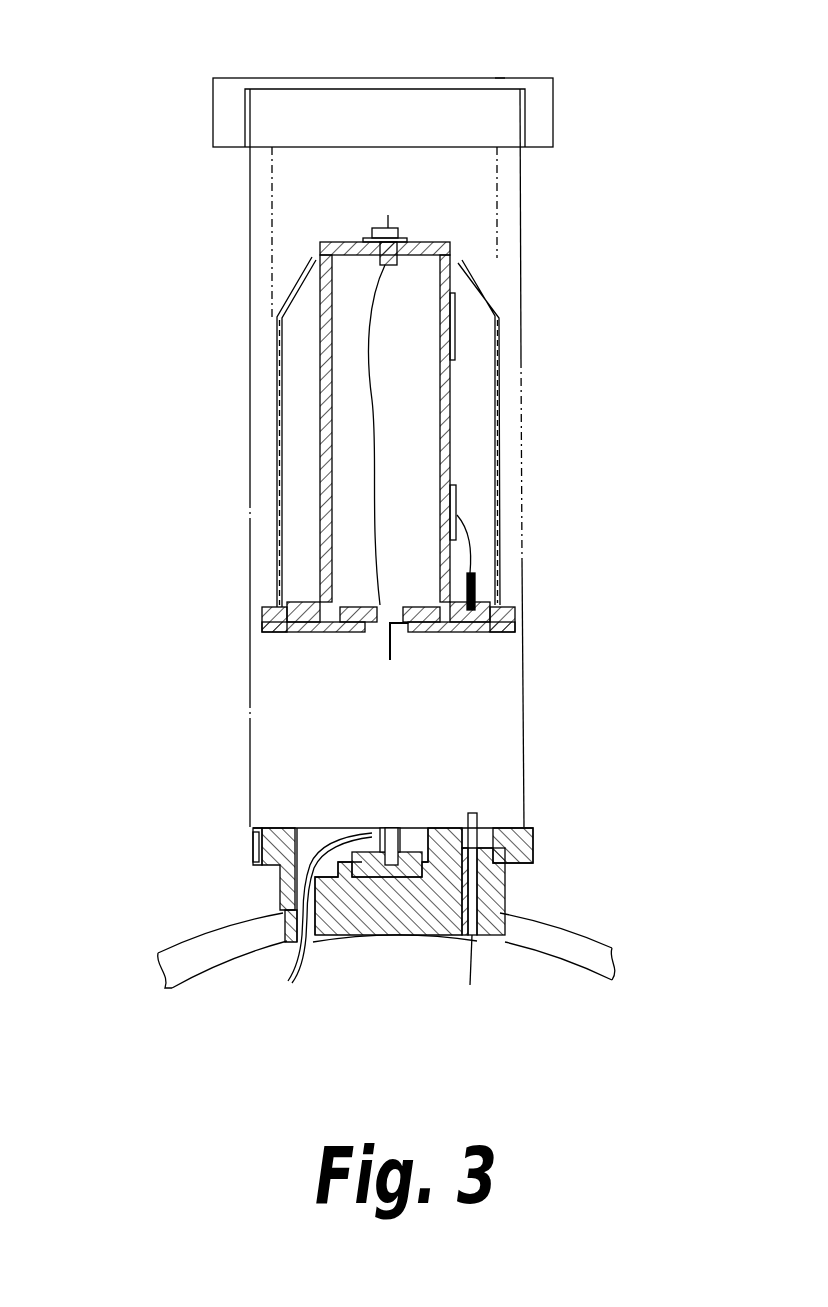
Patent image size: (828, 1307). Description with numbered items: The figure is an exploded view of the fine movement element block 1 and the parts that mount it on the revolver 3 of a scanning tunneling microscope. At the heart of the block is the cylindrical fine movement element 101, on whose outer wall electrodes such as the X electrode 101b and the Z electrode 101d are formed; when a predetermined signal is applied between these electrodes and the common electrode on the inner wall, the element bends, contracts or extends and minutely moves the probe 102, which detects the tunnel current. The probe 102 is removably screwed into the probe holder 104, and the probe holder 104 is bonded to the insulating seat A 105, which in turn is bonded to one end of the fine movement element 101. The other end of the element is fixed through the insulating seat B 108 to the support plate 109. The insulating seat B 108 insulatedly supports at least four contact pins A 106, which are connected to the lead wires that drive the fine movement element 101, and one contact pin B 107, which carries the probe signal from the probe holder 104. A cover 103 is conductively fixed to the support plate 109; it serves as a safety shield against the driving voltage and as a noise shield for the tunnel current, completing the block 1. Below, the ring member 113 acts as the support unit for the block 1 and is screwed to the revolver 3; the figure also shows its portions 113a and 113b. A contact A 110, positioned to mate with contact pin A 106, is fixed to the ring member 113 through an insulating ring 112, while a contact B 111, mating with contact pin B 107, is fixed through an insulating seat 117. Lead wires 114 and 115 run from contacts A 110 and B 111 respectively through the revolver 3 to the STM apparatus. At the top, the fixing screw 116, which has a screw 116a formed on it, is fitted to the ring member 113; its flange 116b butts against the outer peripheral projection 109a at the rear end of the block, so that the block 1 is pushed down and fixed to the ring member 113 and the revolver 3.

The fine movement element block 1 is at (535, 477).
The revolver 3 is at (583, 940).
The cylindrical fine movement element 101 is at (450, 402).
The X electrode 101b is at (455, 497).
The Z electrode 101d is at (453, 347).
The probe 102 is at (389, 217).
The cover 103 is at (487, 293).
The probe holder 104 is at (363, 240).
The insulating seat A 105 is at (368, 240).
The contact pin A 106 is at (478, 593).
The contact pin B 107 is at (395, 648).
The insulating seat B 108 is at (295, 607).
The support plate 109 is at (317, 632).
The outer peripheral projection 109a is at (262, 622).
The contact A 110 is at (477, 826).
The contact B 111 is at (390, 825).
The insulating ring 112 is at (505, 882).
The ring member 113 is at (267, 822).
The flange insert portion 113a is at (287, 940).
The flange rim 113b is at (253, 845).
The lead wire 114 is at (470, 985).
The lead wire 115 is at (298, 984).
The fixing screw 116 is at (538, 92).
The screw 116a is at (525, 117).
The flange 116b is at (503, 82).
The insulating seat 117 is at (408, 878).